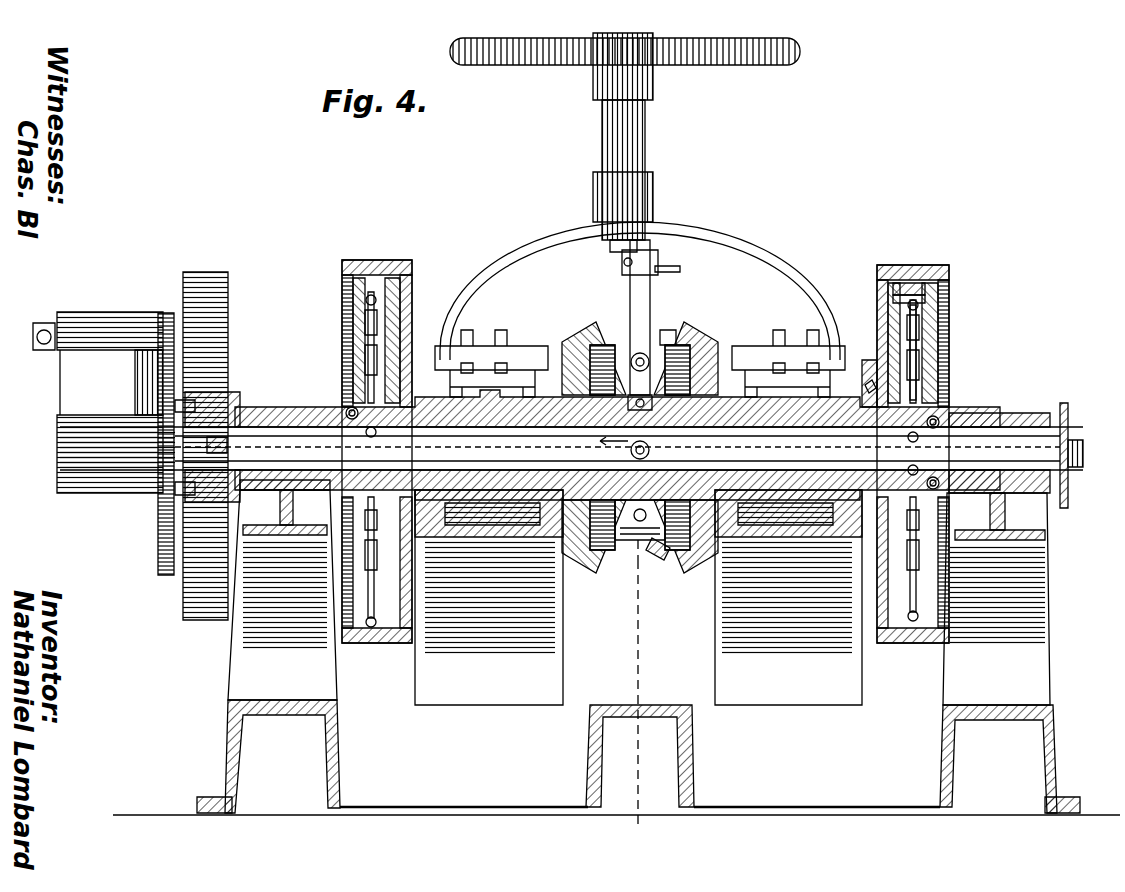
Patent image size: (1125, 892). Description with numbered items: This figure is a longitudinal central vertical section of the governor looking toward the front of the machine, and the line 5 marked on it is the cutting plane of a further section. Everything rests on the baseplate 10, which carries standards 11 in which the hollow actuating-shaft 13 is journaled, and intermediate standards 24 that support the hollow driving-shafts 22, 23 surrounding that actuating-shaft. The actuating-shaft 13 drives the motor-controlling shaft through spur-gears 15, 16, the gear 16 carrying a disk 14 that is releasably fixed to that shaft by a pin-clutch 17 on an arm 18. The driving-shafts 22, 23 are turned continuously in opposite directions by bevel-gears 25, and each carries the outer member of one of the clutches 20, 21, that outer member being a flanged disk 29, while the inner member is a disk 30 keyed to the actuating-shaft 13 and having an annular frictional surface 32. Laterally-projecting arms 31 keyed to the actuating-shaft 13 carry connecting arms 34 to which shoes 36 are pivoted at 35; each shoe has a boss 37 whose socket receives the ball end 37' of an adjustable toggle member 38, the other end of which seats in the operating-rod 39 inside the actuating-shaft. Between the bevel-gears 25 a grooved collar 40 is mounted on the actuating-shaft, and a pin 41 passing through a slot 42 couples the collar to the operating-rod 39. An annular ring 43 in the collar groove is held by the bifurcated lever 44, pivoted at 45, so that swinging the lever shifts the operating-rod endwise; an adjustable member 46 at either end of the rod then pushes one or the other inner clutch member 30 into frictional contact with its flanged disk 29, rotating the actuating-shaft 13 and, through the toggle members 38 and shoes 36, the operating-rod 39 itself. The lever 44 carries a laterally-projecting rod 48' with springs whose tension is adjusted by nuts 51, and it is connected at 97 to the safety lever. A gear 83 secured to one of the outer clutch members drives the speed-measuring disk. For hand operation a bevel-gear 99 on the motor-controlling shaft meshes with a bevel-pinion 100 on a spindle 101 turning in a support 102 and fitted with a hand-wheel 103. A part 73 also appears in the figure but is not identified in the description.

The cutting-plane line 5 is at (627, 426).
The baseplate 10 is at (226, 735).
The standards 11 is at (240, 674).
The actuating-shaft 13 is at (266, 408).
The disk 14 is at (166, 313).
The spur-gear 15 is at (229, 390).
The spur-gear 16 is at (228, 320).
The pin-clutch 17 is at (44, 322).
The arm 18 is at (105, 306).
The clutch 20 is at (377, 275).
The clutch 21 is at (905, 280).
The driving-shaft 22 is at (425, 402).
The driving-shaft 23 is at (868, 382).
The standards 24 is at (555, 639).
The bevel-gears 25 is at (626, 572).
The flanged disk 29 is at (343, 264).
The disk 30 is at (402, 332).
The laterally-projecting arms 31 is at (322, 490).
The annular frictional surface 32 is at (403, 302).
The connecting arms 34 is at (928, 322).
The pivot 35 is at (926, 300).
The shoes 36 is at (405, 275).
The boss 37 is at (624, 499).
The ball end 37' is at (637, 345).
The adjustable toggle member 38 is at (350, 328).
The operating-rod 39 is at (1015, 414).
The grooved collar 40 is at (612, 538).
The pin 41 is at (650, 450).
The slot 42 is at (660, 556).
The annular ring 43 is at (640, 562).
The bifurcated lever 44 is at (650, 298).
The pivot 45 is at (656, 342).
The adjustable member 46 is at (256, 470).
The laterally-projecting rod 48' is at (605, 257).
The nuts 51 is at (625, 268).
The collar 73 is at (1064, 404).
The gear 83 is at (936, 370).
The connection 97 is at (680, 269).
The bevel-gear 99 is at (672, 348).
The bevel-pinion 100 is at (600, 330).
The spindle 101 is at (648, 134).
The support 102 is at (712, 243).
The hand-wheel 103 is at (720, 62).